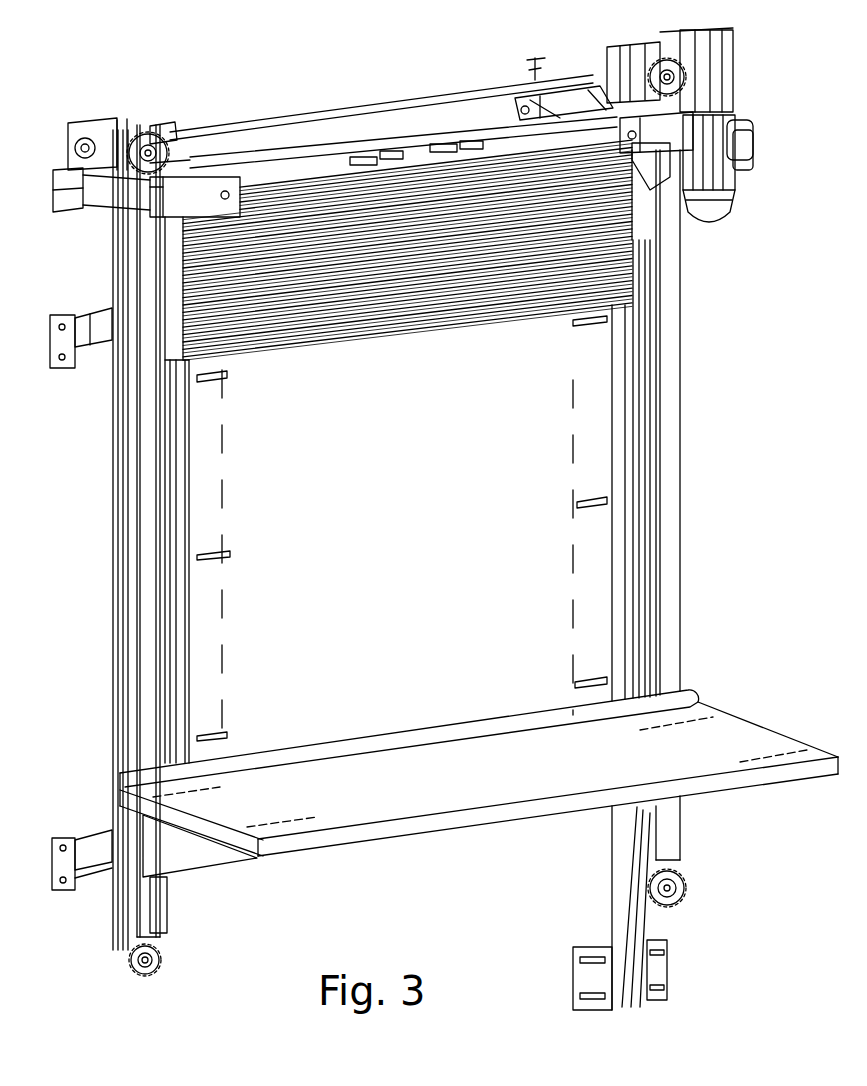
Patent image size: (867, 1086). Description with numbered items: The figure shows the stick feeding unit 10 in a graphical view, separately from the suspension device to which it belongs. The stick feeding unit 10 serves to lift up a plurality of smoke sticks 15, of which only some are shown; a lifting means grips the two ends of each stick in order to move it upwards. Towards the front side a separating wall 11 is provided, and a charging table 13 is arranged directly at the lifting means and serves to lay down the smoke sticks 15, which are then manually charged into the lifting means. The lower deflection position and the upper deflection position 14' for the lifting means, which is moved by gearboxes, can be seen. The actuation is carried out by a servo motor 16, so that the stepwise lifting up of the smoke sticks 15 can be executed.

The stick feeding unit 10 is at (185, 120).
The separating wall 11 is at (422, 502).
The charging table 13 is at (479, 783).
The upper deflection position 14' is at (114, 120).
The smoke sticks 15 is at (365, 337).
The servo motor 16 is at (722, 190).